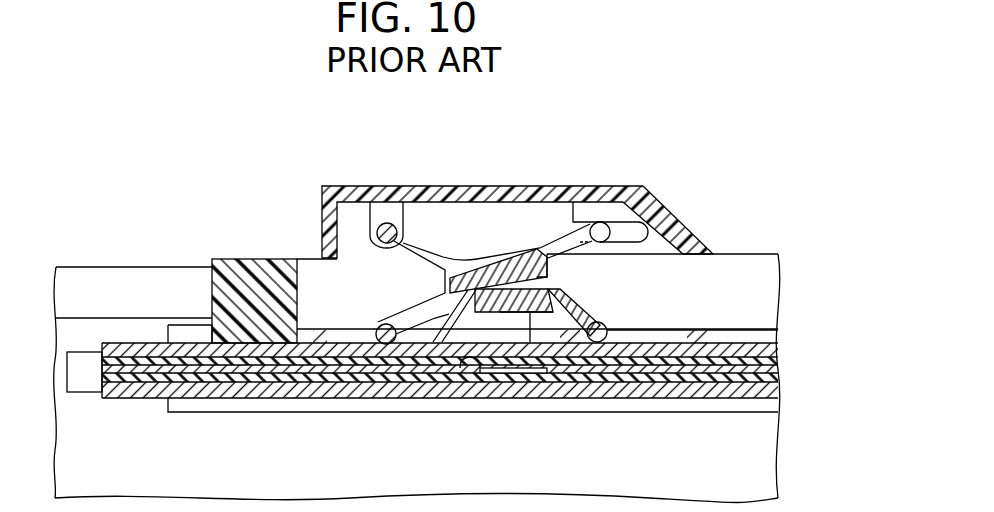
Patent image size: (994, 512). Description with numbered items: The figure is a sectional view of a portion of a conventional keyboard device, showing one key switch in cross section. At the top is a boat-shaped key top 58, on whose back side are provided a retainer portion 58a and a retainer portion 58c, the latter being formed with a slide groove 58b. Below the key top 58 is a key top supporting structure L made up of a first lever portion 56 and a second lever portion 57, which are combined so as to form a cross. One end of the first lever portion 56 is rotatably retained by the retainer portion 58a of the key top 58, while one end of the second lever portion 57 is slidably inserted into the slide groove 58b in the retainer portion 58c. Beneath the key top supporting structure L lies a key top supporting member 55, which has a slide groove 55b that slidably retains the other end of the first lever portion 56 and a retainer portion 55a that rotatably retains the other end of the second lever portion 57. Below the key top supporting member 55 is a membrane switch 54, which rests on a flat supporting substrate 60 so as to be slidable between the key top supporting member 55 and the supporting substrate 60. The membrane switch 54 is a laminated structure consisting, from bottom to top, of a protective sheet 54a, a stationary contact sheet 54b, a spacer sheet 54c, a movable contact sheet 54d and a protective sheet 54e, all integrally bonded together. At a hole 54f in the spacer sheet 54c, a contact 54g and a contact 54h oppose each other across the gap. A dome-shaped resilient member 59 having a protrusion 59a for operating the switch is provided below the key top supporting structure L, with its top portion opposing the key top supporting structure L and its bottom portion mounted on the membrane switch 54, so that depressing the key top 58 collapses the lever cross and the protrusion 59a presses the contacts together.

The membrane switch 54 is at (473, 341).
The protective sheet 54a is at (697, 390).
The stationary contact sheet 54b is at (770, 375).
The spacer sheet 54c is at (673, 357).
The movable contact sheet 54d is at (737, 333).
The protective sheet 54e is at (765, 346).
The hole 54f is at (562, 377).
The contact 54g is at (493, 372).
The contact 54h is at (462, 362).
The key top supporting member 55 is at (764, 333).
The retainer portion 55a is at (368, 340).
The slide groove 55b is at (639, 340).
The first lever portion 56 is at (430, 253).
The second lever portion 57 is at (413, 315).
The key top 58 is at (564, 178).
The retainer portion 58a is at (410, 215).
The slide groove 58b is at (640, 232).
The retainer portion 58c is at (621, 202).
The dome-shaped resilient member 59 is at (594, 326).
The protrusion 59a is at (531, 343).
The supporting substrate 60 is at (168, 402).
The key top supporting structure L is at (501, 232).